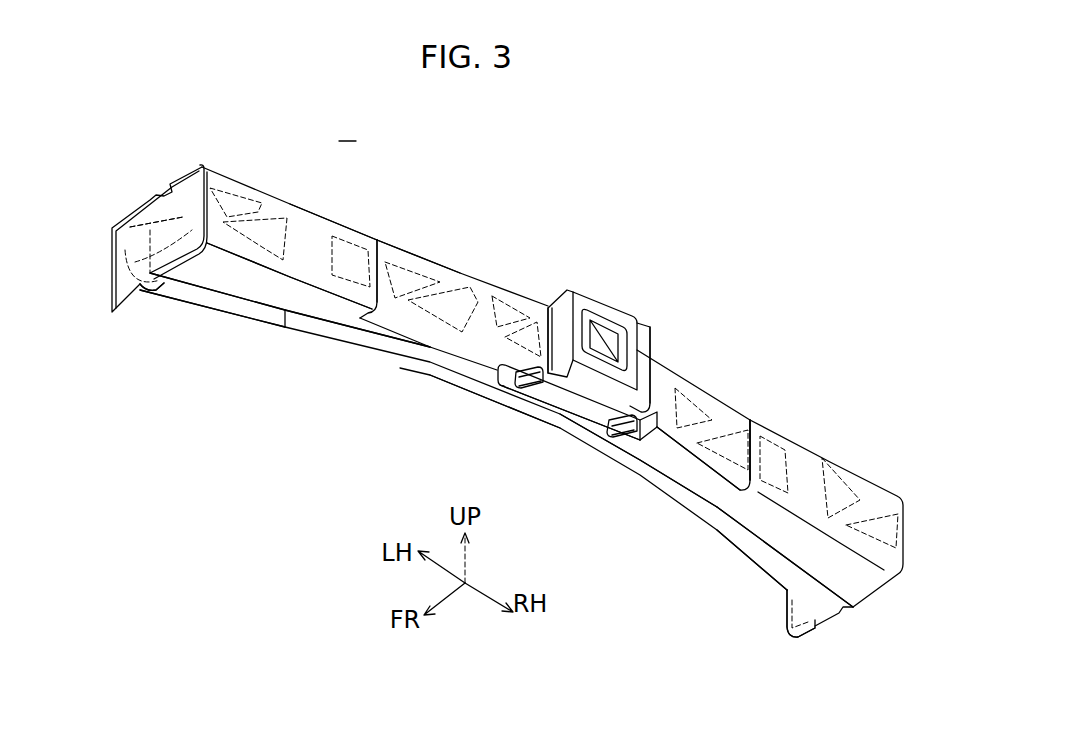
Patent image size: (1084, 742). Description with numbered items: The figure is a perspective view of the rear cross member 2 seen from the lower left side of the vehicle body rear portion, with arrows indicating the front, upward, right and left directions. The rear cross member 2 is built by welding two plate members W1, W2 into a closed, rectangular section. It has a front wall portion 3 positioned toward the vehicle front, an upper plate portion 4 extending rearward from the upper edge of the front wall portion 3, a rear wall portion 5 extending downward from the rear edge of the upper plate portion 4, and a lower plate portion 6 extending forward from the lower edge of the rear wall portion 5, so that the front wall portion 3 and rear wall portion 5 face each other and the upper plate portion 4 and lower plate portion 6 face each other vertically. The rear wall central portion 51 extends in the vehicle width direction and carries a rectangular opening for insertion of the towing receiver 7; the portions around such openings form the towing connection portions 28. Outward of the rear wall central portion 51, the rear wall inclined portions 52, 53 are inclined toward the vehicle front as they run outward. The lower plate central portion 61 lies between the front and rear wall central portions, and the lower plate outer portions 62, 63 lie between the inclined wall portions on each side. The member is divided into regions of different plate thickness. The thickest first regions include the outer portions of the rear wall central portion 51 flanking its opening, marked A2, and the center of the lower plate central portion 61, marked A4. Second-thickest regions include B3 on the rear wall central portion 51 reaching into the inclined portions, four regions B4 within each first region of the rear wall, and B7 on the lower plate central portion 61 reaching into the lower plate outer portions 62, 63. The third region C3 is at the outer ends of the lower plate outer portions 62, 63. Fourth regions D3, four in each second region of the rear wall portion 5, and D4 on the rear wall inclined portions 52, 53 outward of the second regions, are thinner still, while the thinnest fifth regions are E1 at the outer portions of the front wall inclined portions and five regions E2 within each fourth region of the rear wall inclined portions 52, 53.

The rear cross member 2 is at (507, 375).
The front wall portion 3 is at (587, 448).
The upper plate portion 4 is at (366, 230).
The rear wall portion 5 is at (468, 264).
The lower plate portion 6 is at (396, 352).
The towing receiver 7 is at (577, 325).
The towing connection portions 28 is at (560, 292).
The rear wall central portion 51 is at (692, 392).
The rear wall inclined portion 52 is at (312, 332).
The rear wall inclined portion 53 is at (750, 553).
The lower plate central portion 61 is at (446, 396).
The lower plate outer portion 62 is at (200, 300).
The lower plate outer portion 63 is at (782, 586).
The first region A2 is at (496, 292).
The first region A4 is at (550, 430).
The second region B3 is at (399, 254).
The second region B4 is at (528, 366).
The second region B7 is at (353, 346).
The third region C3 is at (140, 300).
The fourth region D3 is at (424, 272).
The fourth region D4 is at (301, 216).
The fifth region E1 is at (140, 238).
The fifth region E2 is at (232, 196).
The plate member W1 is at (286, 328).
The plate member W2 is at (776, 430).